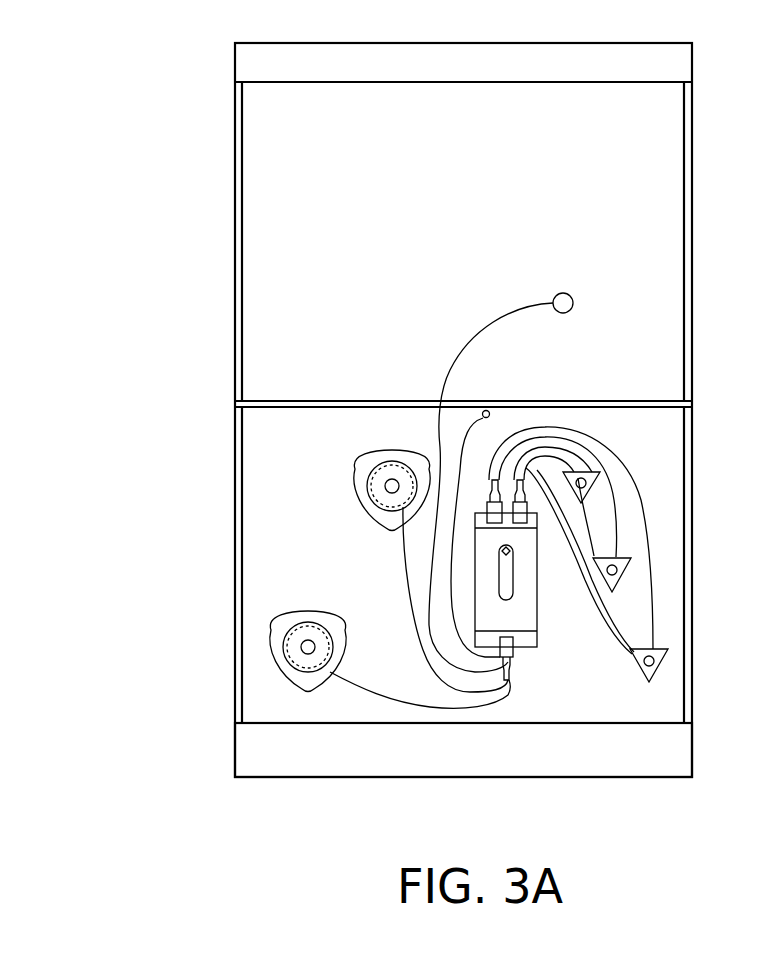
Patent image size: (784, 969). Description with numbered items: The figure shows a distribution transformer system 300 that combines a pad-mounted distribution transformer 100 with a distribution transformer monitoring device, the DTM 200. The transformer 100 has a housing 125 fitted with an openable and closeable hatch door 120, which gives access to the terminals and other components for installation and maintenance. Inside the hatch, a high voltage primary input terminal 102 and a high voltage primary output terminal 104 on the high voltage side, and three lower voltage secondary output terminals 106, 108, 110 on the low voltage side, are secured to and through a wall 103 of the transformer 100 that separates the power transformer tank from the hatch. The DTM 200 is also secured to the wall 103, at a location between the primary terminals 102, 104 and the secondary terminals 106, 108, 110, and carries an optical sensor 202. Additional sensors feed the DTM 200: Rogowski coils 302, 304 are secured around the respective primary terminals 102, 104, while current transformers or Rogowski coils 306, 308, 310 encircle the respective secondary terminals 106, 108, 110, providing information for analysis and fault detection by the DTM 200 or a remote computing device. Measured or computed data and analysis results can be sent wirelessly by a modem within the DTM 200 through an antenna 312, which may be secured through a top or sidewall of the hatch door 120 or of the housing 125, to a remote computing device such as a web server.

The padmount distribution transformer 100 is at (212, 538).
The high voltage primary input terminal 102 is at (283, 645).
The wall 103 is at (347, 564).
The high voltage primary output terminal 104 is at (372, 457).
The lower voltage secondary output terminal 106 is at (590, 485).
The lower voltage secondary output terminal 108 is at (623, 572).
The lower voltage secondary output terminal 110 is at (660, 663).
The hatch door 120 is at (693, 232).
The housing 125 is at (692, 728).
The DTM 200 is at (537, 605).
The optical sensor 202 is at (503, 556).
The distribution transformer system 300 is at (507, 826).
The Rogowski coil 302 is at (297, 630).
The Rogowski coil 304 is at (367, 486).
The current transformer or Rogowski coil 306 is at (597, 460).
The current transformer or Rogowski coil 308 is at (623, 552).
The current transformer or Rogowski coil 310 is at (663, 650).
The antenna 312 is at (573, 303).